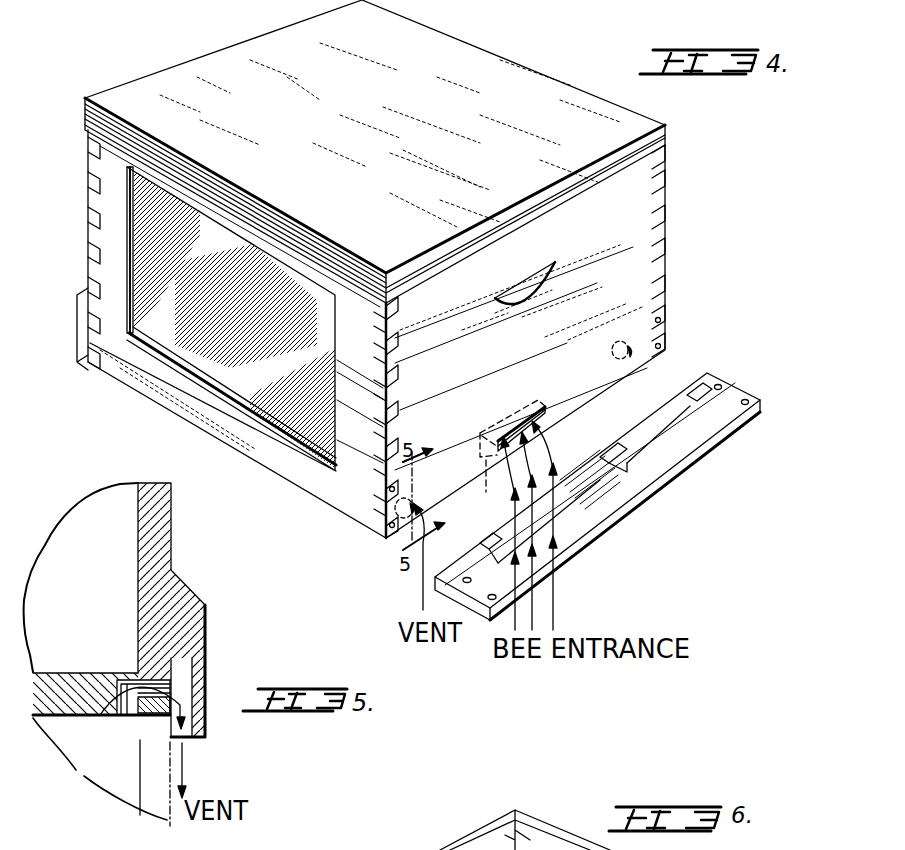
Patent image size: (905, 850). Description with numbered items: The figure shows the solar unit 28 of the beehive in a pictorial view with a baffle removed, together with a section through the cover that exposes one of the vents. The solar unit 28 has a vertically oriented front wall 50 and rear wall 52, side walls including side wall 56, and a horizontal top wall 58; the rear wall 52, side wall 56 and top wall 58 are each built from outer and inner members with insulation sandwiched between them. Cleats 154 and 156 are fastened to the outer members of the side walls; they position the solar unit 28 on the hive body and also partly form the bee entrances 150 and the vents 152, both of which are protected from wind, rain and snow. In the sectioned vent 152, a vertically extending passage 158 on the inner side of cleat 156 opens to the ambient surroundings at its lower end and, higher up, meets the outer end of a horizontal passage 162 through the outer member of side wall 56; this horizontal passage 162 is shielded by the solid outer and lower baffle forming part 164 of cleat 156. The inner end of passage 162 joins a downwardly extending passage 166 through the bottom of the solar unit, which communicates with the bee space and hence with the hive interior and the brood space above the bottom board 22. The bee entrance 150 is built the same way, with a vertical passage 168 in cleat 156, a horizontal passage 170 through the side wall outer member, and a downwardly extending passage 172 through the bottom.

In FIG. 4, the top wall 58 is at (452, 57).
In FIG. 4, the solar unit 28 is at (78, 208).
In FIG. 4, the front wall 50 is at (100, 232).
In FIG. 4, the cleat 154 is at (78, 350).
In FIG. 4, the rear wall 52 is at (666, 226).
In FIG. 4, the side wall 56 is at (630, 271).
In FIG. 5, the side wall 56 is at (173, 535).
In FIG. 4, the vent 152 is at (627, 336).
In FIG. 5, the vent 152 is at (214, 672).
In FIG. 4, the bee entrance 150 is at (527, 410).
In FIG. 4, the horizontal passage 170 is at (478, 432).
In FIG. 4, the downwardly extending passage 172 is at (506, 456).
In FIG. 4, the vertically extending passage 158 is at (480, 552).
In FIG. 5, the vertically extending passage 158 is at (200, 735).
In FIG. 4, the vertical passage 168 is at (600, 460).
In FIG. 4, the cleat 156 is at (633, 517).
In FIG. 5, the cleat 156 is at (207, 630).
In FIG. 5, the baffle forming part 164 is at (202, 745).
In FIG. 5, the downwardly extending passage 166 is at (120, 703).
In FIG. 5, the horizontal passage 162 is at (150, 715).
In FIG. 6, the bottom board 22 is at (430, 846).